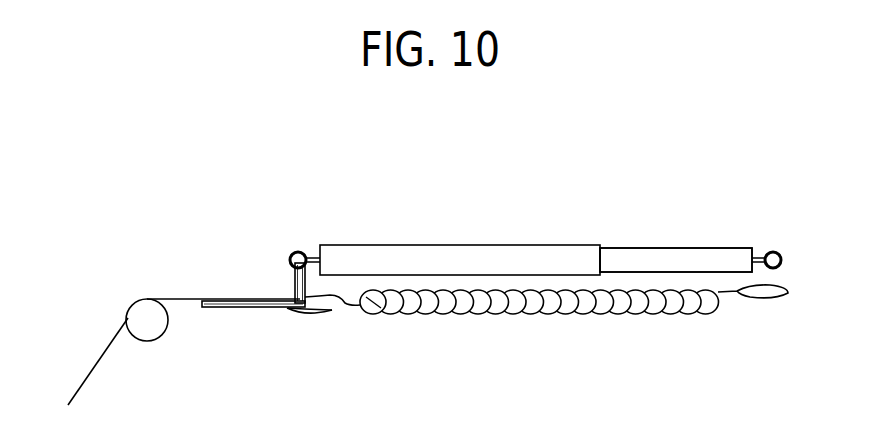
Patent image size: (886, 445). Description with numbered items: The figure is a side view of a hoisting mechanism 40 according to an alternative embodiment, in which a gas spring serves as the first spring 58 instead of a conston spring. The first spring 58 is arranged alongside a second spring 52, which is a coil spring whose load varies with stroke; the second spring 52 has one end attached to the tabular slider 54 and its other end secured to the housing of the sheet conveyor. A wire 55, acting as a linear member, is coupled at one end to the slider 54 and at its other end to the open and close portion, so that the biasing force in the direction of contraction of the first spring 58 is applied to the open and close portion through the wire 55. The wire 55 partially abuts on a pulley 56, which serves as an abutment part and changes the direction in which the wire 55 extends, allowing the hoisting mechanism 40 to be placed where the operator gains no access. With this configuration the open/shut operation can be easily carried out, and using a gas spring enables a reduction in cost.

The hoisting mechanism 40 is at (573, 188).
The second spring 52 is at (569, 315).
The slider 54 is at (246, 308).
The wire 55 is at (180, 298).
The pulley 56 is at (163, 336).
The first spring 58 is at (664, 247).